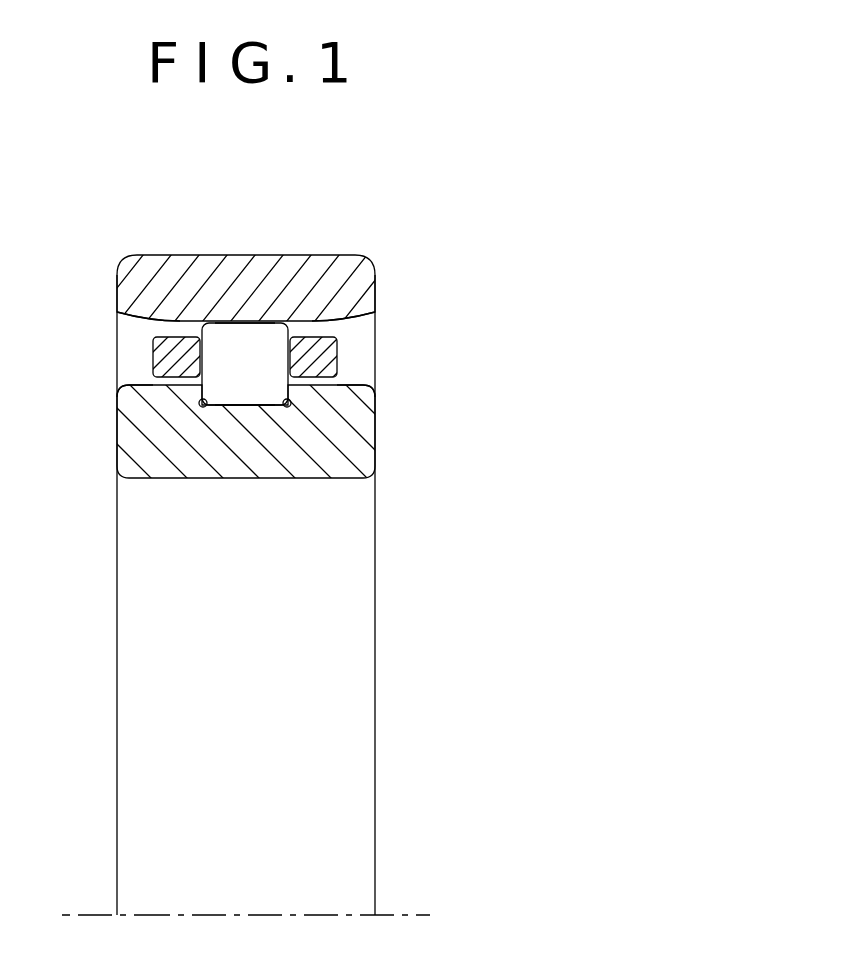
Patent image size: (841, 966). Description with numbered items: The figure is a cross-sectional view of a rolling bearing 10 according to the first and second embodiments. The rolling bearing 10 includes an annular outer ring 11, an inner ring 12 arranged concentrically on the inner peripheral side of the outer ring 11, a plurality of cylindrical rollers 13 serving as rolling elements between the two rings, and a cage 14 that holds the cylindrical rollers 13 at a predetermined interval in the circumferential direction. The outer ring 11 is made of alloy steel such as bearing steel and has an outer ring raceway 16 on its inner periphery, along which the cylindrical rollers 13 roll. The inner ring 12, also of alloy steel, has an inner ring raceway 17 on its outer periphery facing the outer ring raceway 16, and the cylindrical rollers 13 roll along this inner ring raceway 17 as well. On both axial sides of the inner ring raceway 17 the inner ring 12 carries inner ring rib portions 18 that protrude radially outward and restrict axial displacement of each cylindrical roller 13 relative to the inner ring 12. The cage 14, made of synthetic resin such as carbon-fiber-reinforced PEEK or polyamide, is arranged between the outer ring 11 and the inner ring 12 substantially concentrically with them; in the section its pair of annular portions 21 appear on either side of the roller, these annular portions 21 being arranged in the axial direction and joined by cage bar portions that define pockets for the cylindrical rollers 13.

The rolling bearing 10 is at (412, 227).
The outer ring 11 is at (213, 265).
The inner ring 12 is at (341, 470).
The cylindrical roller 13 is at (267, 338).
The cage 14 is at (340, 343).
The outer ring raceway 16 is at (240, 330).
The inner ring raceway 17 is at (247, 398).
The inner ring rib portion 18 is at (126, 396).
The annular portion 21 is at (158, 338).